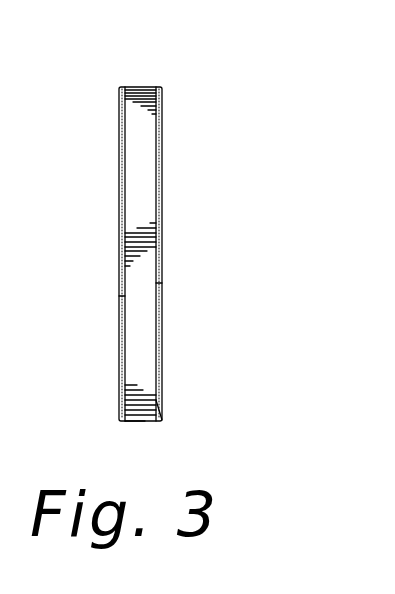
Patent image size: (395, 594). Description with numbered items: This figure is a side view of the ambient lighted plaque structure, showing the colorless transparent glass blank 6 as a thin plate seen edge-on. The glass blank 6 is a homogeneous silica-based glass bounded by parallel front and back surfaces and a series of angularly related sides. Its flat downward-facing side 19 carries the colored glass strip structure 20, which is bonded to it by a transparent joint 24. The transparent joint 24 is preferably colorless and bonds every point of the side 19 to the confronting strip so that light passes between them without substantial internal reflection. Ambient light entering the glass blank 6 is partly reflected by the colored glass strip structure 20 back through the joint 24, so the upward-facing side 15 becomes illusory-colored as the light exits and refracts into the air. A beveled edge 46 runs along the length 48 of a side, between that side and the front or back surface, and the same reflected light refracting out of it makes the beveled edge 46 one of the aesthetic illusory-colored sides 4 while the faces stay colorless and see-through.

The aesthetic illusory-colored sides 4 is at (140, 120).
The colorless transparent glass blank 6 is at (118, 211).
The side facing in an upward direction 15 is at (143, 85).
The flat side facing downward 19 is at (150, 413).
The colored glass strip structure 20 is at (135, 422).
The transparent joint 24 is at (160, 415).
The beveled edge 46 is at (120, 152).
The length 48 is at (121, 296).